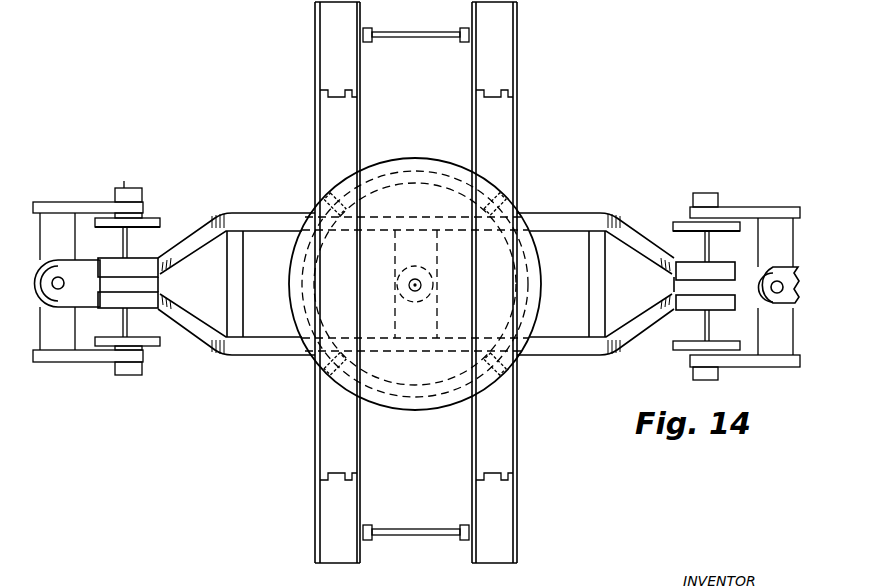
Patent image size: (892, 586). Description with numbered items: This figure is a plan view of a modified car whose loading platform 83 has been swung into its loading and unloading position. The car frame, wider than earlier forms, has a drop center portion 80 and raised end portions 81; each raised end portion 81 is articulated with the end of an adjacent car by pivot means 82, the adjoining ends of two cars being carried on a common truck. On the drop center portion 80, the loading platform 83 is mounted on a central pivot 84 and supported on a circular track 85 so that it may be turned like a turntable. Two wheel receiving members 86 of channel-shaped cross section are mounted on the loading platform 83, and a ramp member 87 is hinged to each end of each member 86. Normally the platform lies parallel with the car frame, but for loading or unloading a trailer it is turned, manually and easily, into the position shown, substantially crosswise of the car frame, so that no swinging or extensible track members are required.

The drop center portion 80 is at (287, 221).
The raised end portions 81 is at (110, 265).
The pivot means 82 is at (59, 276).
The loading platform 83 is at (438, 163).
The central pivot 84 is at (415, 276).
The circular track 85 is at (447, 392).
The wheel receiving members 86 is at (485, 112).
The ramp member 87 is at (483, 65).